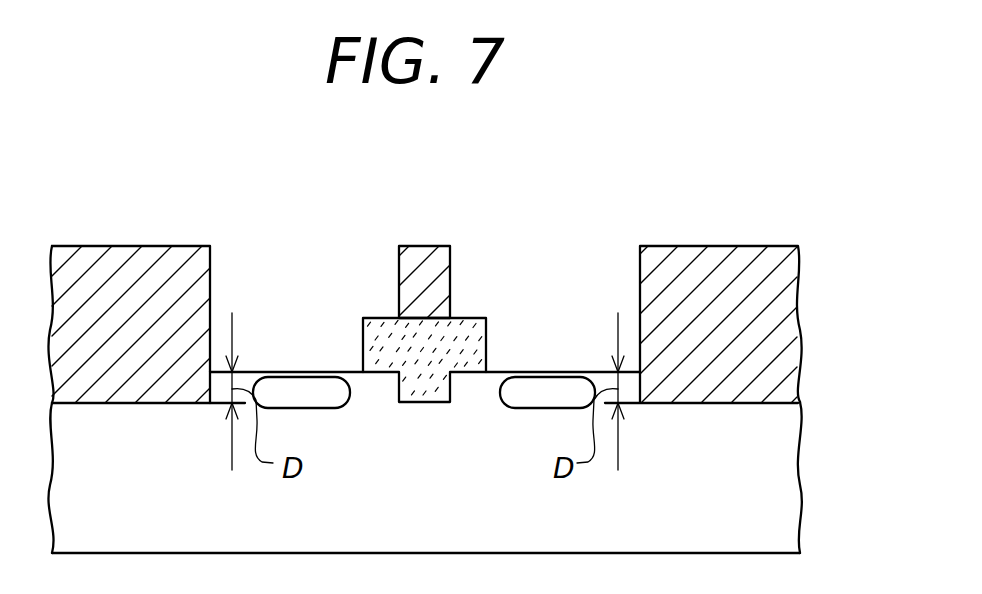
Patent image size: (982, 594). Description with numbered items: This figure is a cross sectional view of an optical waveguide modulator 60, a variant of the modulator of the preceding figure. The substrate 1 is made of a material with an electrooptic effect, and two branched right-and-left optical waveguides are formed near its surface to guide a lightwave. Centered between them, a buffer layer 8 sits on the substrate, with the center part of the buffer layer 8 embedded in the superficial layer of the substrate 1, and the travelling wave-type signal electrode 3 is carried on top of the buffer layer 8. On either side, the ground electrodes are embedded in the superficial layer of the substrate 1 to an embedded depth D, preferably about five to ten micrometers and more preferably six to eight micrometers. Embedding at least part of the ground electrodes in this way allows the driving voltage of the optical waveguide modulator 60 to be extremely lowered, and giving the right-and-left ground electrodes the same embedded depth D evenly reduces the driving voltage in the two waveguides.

The substrate 1 is at (767, 483).
The travelling wave-type signal electrode 3 is at (428, 252).
The buffer layer 8 is at (465, 337).
The optical waveguide modulator 60 is at (825, 247).